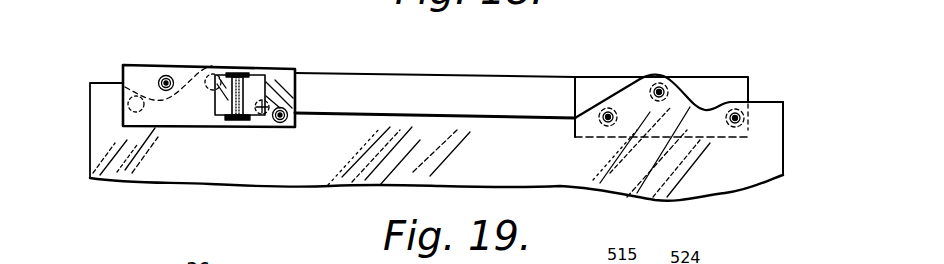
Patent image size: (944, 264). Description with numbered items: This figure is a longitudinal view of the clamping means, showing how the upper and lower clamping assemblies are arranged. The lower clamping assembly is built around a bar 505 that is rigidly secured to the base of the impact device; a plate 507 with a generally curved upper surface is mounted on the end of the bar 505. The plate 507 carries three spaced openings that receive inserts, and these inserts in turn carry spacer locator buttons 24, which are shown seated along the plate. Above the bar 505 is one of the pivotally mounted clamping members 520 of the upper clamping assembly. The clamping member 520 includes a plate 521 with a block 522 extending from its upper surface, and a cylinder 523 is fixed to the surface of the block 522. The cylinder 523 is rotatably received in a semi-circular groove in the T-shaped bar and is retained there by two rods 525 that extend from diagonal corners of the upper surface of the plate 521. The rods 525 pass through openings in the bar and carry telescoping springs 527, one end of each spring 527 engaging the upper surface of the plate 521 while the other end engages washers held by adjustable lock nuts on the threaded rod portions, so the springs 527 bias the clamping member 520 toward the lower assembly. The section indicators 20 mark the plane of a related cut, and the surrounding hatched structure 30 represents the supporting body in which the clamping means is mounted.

The section line 20- 20 is at (215, 65).
The spacer locator buttons 24 is at (653, 84).
The base 30 is at (127, 84).
The bar 505 is at (440, 102).
The plate 507 is at (707, 93).
The clamping member 520 is at (144, 66).
The plate 521 is at (275, 80).
The block 522 is at (256, 79).
The cylinder 523 is at (240, 80).
The rods 525 is at (168, 77).
The telescoping springs 527 is at (166, 76).